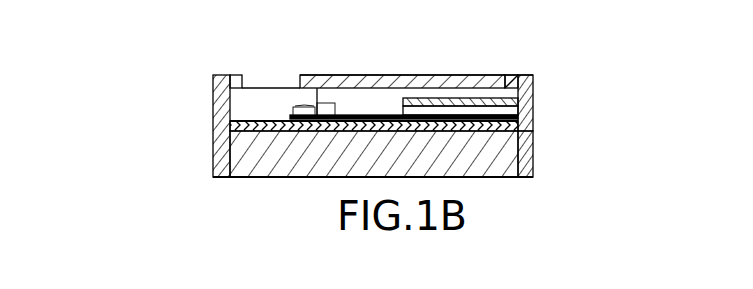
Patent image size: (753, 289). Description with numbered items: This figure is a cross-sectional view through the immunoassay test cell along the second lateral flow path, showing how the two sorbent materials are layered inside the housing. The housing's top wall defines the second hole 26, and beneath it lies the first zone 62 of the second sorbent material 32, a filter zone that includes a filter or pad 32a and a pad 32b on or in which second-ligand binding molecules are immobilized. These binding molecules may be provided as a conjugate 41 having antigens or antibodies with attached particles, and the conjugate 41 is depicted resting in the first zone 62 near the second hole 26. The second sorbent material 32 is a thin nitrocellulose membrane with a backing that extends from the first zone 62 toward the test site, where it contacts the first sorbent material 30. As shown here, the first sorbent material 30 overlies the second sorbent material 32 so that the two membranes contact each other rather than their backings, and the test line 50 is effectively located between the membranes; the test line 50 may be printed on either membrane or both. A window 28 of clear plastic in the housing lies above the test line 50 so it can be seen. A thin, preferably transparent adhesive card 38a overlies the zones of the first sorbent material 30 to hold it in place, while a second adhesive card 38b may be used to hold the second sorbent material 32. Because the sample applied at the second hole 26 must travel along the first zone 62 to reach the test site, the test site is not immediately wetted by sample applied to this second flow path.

The first zone 62 is at (253, 95).
The second hole 26 is at (299, 80).
The window 28 is at (463, 75).
The card 38a is at (515, 97).
The card 38b is at (515, 123).
The pad 32b is at (300, 119).
The filter or pad 32a is at (243, 104).
The second sorbent material 32 is at (516, 118).
The first sorbent material 30 is at (516, 104).
The test line 50 is at (447, 112).
The conjugate 41 is at (320, 120).